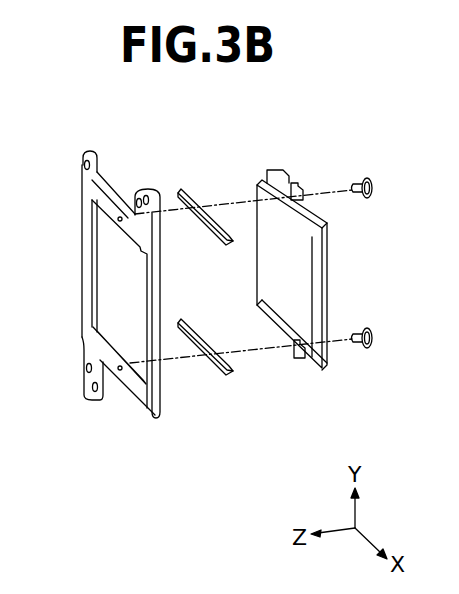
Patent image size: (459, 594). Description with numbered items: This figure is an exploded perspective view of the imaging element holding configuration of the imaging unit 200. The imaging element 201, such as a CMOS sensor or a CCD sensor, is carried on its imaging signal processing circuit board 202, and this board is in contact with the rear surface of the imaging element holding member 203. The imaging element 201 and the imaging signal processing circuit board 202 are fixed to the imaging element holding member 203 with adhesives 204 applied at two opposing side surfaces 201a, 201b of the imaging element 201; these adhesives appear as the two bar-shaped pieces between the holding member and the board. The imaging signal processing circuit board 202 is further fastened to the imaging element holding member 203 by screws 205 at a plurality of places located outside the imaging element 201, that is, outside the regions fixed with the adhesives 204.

The imaging unit 200 is at (359, 118).
The imaging element 201 is at (276, 287).
The side surface of imaging element 201a is at (285, 170).
The side surface of imaging element 201b is at (265, 308).
The imaging signal processing circuit board 202 is at (298, 356).
The imaging element holding member 203 is at (127, 378).
The adhesive 204 is at (208, 222).
The screw 205 is at (363, 198).